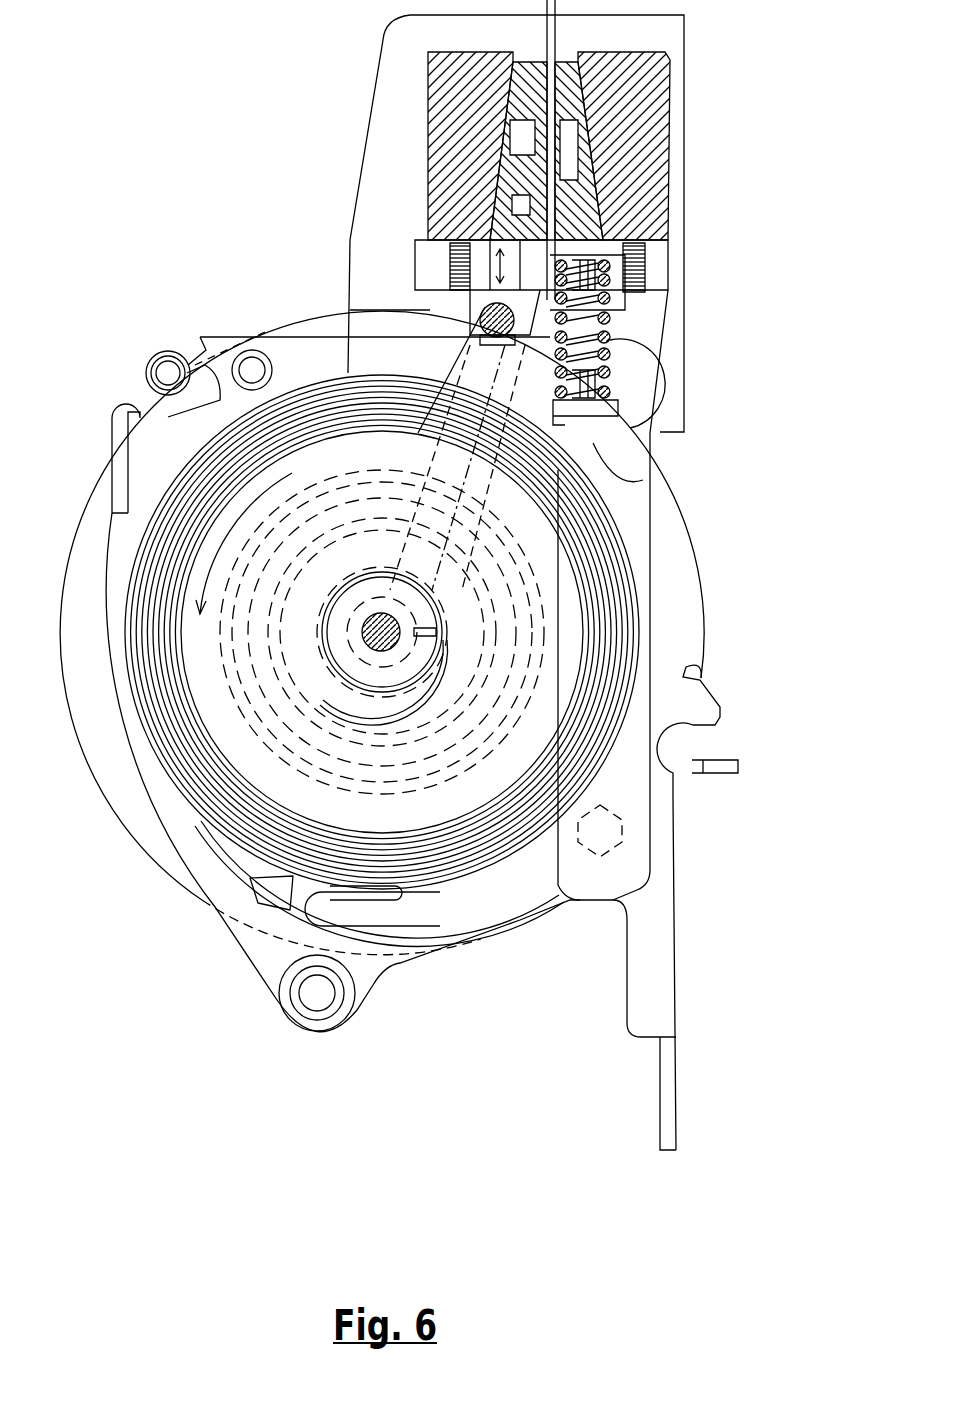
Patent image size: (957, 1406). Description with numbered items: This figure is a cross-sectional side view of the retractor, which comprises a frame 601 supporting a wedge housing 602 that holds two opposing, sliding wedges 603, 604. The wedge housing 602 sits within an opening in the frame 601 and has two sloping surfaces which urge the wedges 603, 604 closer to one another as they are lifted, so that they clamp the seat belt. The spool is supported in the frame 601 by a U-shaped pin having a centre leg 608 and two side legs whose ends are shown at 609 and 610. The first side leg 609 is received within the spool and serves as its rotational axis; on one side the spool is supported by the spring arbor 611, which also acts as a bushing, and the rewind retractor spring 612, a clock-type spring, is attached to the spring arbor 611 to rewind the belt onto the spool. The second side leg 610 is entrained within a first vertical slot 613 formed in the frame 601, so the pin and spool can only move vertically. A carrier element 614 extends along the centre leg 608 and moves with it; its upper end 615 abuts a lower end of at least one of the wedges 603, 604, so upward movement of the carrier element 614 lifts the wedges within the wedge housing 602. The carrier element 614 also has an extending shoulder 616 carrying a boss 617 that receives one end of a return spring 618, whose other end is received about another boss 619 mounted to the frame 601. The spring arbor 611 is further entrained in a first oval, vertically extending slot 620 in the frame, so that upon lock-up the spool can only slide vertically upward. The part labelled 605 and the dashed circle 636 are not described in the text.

The frame 601 is at (658, 1013).
The wedge housing 602 is at (645, 84).
The wedge 603 is at (513, 147).
The wedge 604 is at (577, 144).
The housing body 605 is at (657, 122).
The centre leg 608 is at (427, 458).
The first side leg 609 is at (340, 650).
The second side leg 610 is at (483, 328).
The spring arbor 611 is at (435, 623).
The rewind retractor spring 612 is at (170, 730).
The first vertical slot 613 is at (497, 233).
The carrier element 614 is at (346, 609).
The upper end 615 is at (443, 270).
The extending shoulder 616 is at (643, 477).
The boss 617 is at (600, 387).
The return spring 618 is at (613, 323).
The boss 619 is at (605, 232).
The first oval, vertically extending slot 620 is at (437, 632).
The pitch circle 636 is at (523, 528).